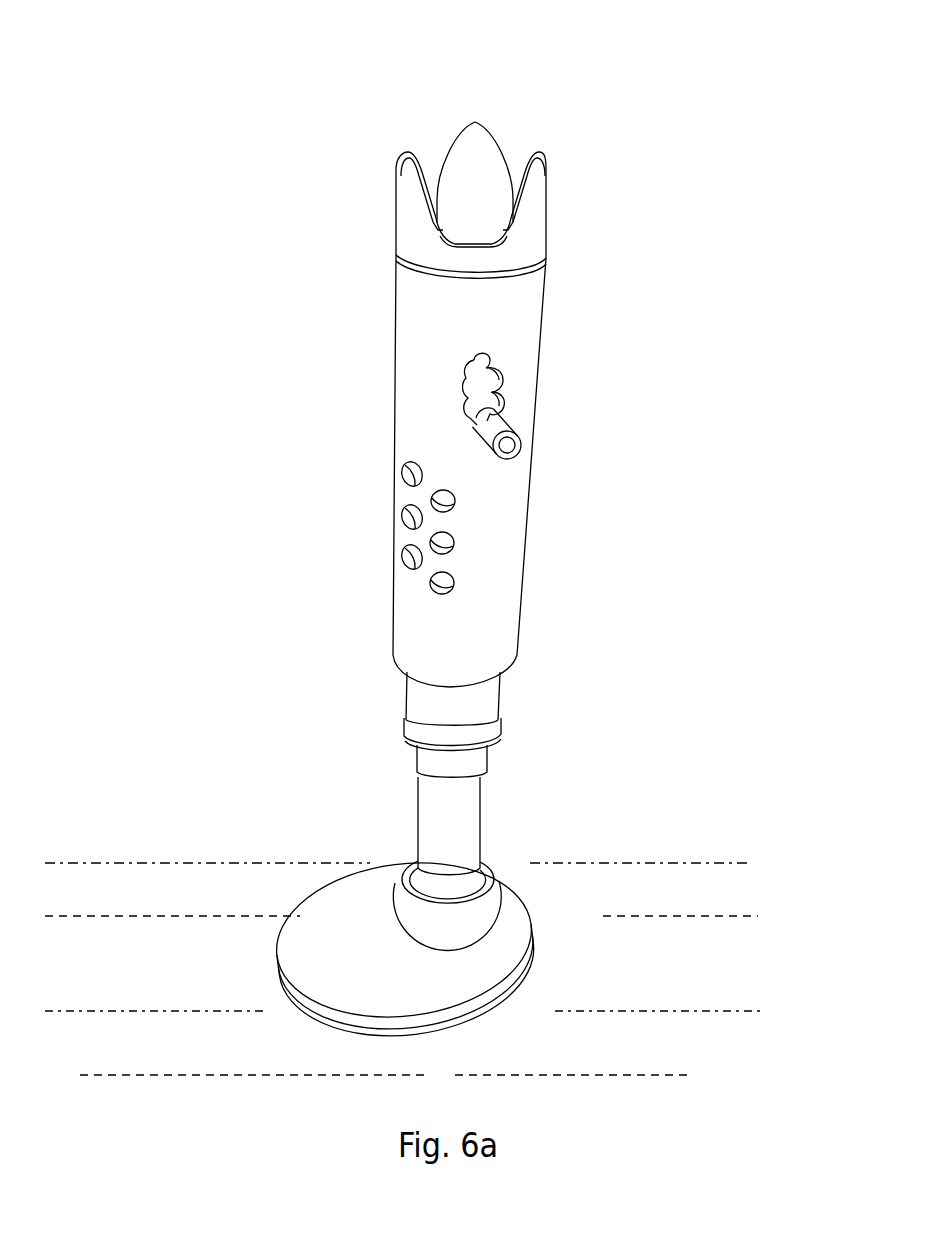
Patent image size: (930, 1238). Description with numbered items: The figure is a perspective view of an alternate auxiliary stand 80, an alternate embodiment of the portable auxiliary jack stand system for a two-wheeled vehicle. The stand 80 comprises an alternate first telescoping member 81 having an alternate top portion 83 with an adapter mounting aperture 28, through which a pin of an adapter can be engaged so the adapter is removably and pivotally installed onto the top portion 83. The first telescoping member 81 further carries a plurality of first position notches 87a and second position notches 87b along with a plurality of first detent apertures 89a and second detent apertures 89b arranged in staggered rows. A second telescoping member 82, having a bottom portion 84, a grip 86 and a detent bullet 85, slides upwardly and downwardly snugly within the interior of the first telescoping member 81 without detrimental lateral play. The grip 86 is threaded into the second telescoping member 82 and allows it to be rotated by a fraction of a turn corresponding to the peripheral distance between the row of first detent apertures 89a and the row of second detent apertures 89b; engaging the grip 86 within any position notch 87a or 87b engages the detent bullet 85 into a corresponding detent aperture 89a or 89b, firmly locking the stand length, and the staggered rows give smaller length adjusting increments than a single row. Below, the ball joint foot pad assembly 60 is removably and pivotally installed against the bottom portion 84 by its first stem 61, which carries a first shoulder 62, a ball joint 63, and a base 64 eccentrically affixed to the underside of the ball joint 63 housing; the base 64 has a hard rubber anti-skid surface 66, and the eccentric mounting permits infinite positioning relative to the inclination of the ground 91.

The alternate auxiliary stand 80 is at (266, 120).
The alternate top portion 83 is at (543, 214).
The adapter mounting aperture 28 is at (399, 256).
The alternate first telescoping member 81 is at (541, 304).
The first position notches 87a is at (468, 364).
The second position notches 87b is at (506, 378).
The grip 86 is at (506, 429).
The first detent apertures 89a is at (404, 470).
The second detent apertures 89b is at (456, 512).
The detent bullet 85 is at (434, 586).
The second telescoping member 82 is at (499, 696).
The bottom portion 84 is at (503, 733).
The first shoulder 62 is at (480, 758).
The first stem 61 is at (425, 806).
The ball joint foot pad assembly 60 is at (296, 798).
The ball joint 63 is at (486, 901).
The base 64 is at (310, 929).
The hard rubber anti-skid surface 66 is at (462, 1013).
The ground 91 is at (706, 916).